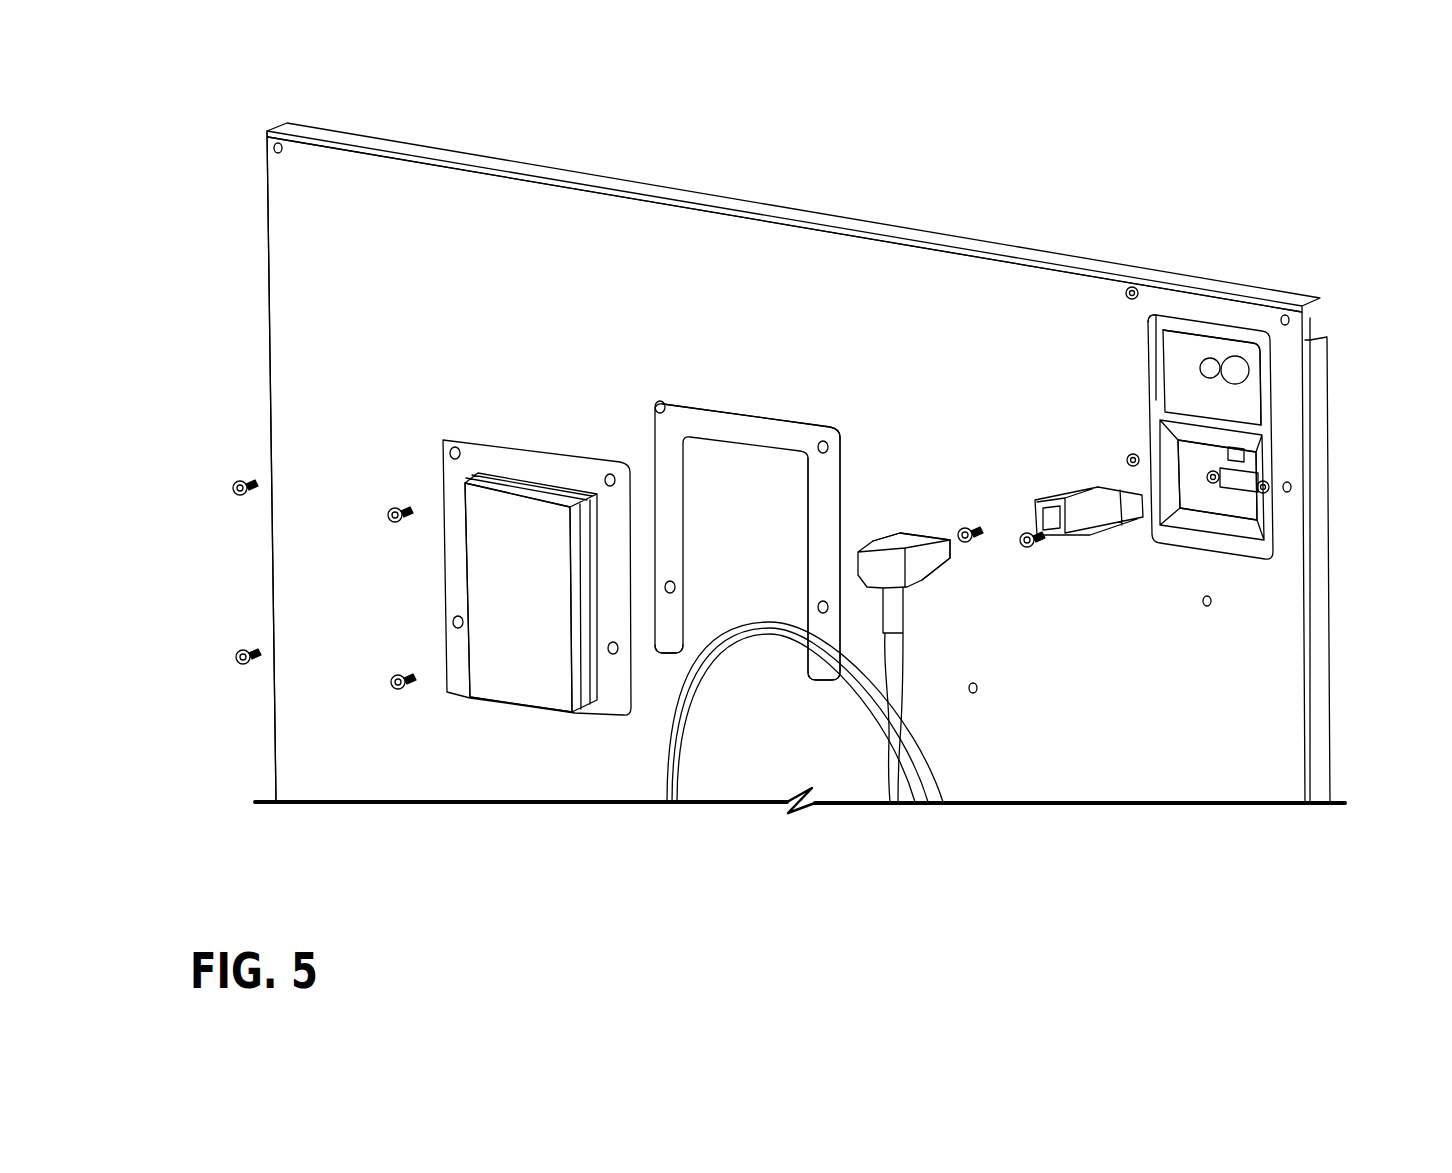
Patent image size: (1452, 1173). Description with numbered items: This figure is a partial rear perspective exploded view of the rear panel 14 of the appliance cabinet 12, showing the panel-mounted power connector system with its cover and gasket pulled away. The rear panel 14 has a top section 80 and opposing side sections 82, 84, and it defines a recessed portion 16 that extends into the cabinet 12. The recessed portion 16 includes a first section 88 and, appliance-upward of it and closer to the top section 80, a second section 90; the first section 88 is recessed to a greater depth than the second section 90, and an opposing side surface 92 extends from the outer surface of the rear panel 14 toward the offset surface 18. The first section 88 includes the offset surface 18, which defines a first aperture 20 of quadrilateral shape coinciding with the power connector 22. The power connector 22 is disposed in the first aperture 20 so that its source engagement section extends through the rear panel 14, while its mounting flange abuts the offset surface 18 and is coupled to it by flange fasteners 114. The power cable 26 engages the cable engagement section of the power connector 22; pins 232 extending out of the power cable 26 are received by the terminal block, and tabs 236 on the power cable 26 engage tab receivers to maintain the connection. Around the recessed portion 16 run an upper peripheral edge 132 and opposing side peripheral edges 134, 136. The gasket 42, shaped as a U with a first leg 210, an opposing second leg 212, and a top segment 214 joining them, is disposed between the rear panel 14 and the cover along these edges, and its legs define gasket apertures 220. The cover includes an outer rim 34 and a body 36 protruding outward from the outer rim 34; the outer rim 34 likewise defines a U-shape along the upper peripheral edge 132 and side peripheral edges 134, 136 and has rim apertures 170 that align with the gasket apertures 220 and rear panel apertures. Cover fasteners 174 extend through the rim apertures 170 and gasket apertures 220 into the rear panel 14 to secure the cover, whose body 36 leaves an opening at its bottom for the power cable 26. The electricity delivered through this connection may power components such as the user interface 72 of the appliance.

The cabinet 12 is at (330, 170).
The top section 80 is at (395, 143).
The rear panel 14 is at (430, 230).
The opposing side surface 92 is at (568, 257).
The side section 82 is at (264, 246).
The side section 84 is at (1320, 540).
The outer rim 34 is at (544, 453).
The user interface 72 is at (537, 650).
The body 36 is at (513, 568).
The first leg 210 is at (674, 485).
The top segment 214 is at (770, 432).
The second leg 212 is at (829, 502).
The gasket 42 is at (672, 640).
The rim apertures 170 is at (452, 447).
The gasket apertures 220 is at (662, 402).
The cover fasteners 174 is at (393, 508).
The power cable 26 is at (925, 582).
The tabs 236 is at (930, 530).
The pins 232 is at (952, 560).
The flange fasteners 114 is at (966, 528).
The power connector 22 is at (1088, 490).
The recessed portion 16 is at (1218, 305).
The second section 90 is at (1185, 352).
The upper peripheral edge 132 is at (1240, 327).
The side peripheral edge 134 is at (1150, 377).
The side peripheral edge 136 is at (1268, 398).
The offset surface 18 is at (1262, 460).
The first aperture 20 is at (1250, 480).
The first section 88 is at (1220, 528).